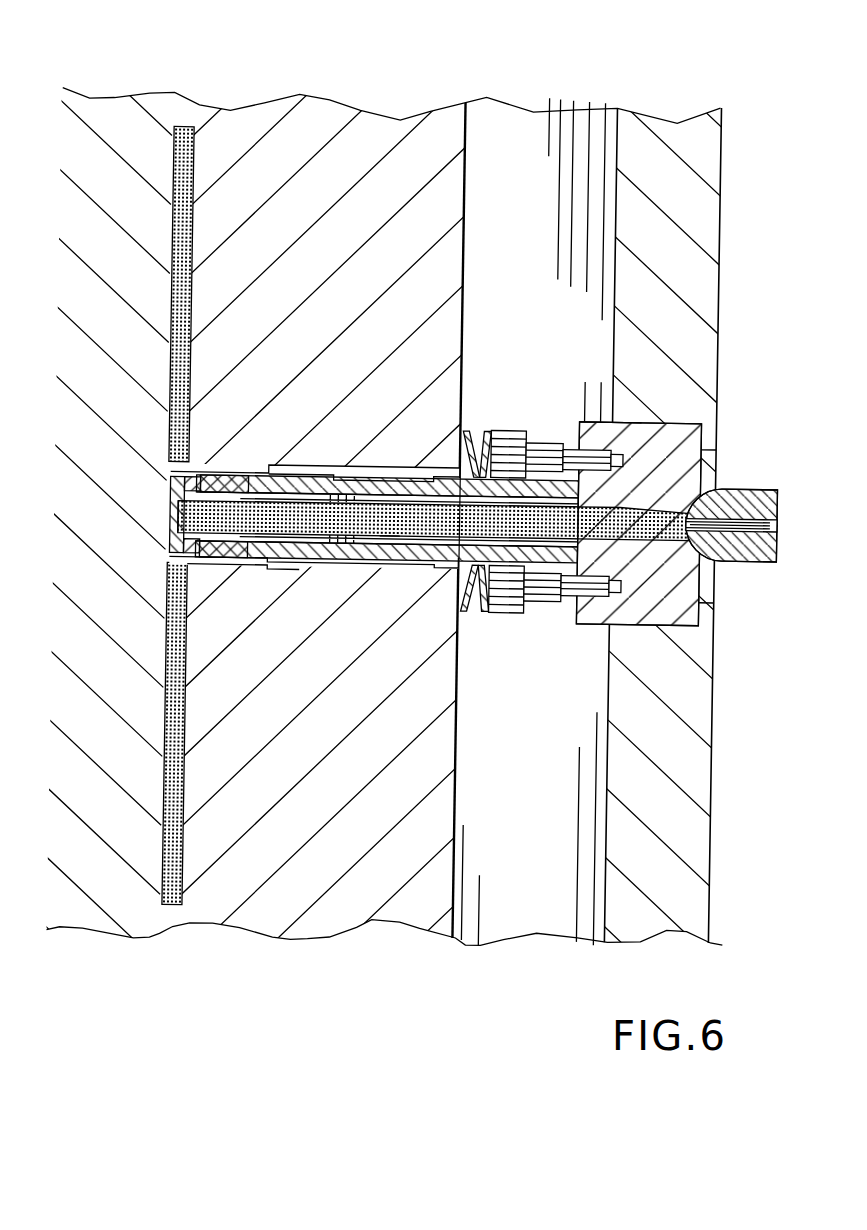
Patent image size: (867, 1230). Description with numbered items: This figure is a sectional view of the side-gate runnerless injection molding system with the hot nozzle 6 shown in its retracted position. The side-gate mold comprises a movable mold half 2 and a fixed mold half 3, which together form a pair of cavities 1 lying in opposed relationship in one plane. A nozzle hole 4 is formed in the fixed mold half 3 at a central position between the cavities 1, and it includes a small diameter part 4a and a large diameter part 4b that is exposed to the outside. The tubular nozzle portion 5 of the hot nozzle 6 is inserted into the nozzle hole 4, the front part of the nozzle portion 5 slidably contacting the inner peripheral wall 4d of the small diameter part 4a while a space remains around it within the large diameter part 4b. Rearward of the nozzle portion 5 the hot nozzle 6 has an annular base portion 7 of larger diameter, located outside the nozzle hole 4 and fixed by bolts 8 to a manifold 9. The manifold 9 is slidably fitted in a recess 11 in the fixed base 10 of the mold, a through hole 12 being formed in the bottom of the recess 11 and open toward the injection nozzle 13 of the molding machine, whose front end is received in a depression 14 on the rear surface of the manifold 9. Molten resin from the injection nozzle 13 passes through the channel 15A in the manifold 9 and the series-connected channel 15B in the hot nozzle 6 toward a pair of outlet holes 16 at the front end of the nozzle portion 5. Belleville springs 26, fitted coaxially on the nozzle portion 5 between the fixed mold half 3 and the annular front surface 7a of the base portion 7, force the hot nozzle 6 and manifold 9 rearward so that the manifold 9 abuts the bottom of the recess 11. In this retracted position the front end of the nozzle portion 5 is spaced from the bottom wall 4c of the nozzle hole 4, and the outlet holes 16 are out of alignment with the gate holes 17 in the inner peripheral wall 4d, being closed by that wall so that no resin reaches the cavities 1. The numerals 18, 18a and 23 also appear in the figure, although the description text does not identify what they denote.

The cavities 1 is at (177, 163).
The movable mold half 2 is at (118, 112).
The fixed mold half 3 is at (320, 110).
The nozzle hole 4 is at (240, 470).
The small diameter part 4a is at (384, 471).
The large diameter part 4b is at (357, 470).
The bottom wall 4c is at (168, 550).
The inner peripheral wall 4d is at (247, 565).
The nozzle portion 5 is at (283, 553).
The hot nozzle 6 is at (545, 414).
The base portion 7 is at (554, 624).
The annular front surface 7a is at (478, 430).
The bolts 8 is at (591, 428).
The manifold 9 is at (685, 440).
The fixed base 10 is at (700, 152).
The recess 11 is at (645, 425).
The through hole 12 is at (710, 450).
The injection nozzle 13 is at (748, 490).
The depression 14 is at (727, 565).
The channel 15A is at (628, 516).
The channel 15B is at (388, 511).
The outlet holes 16 is at (176, 483).
The gate holes 17 is at (177, 478).
The contact pin 18 is at (213, 470).
The pin head 18a is at (165, 510).
The inner liner 23 is at (258, 566).
The belleville springs 26 is at (475, 598).